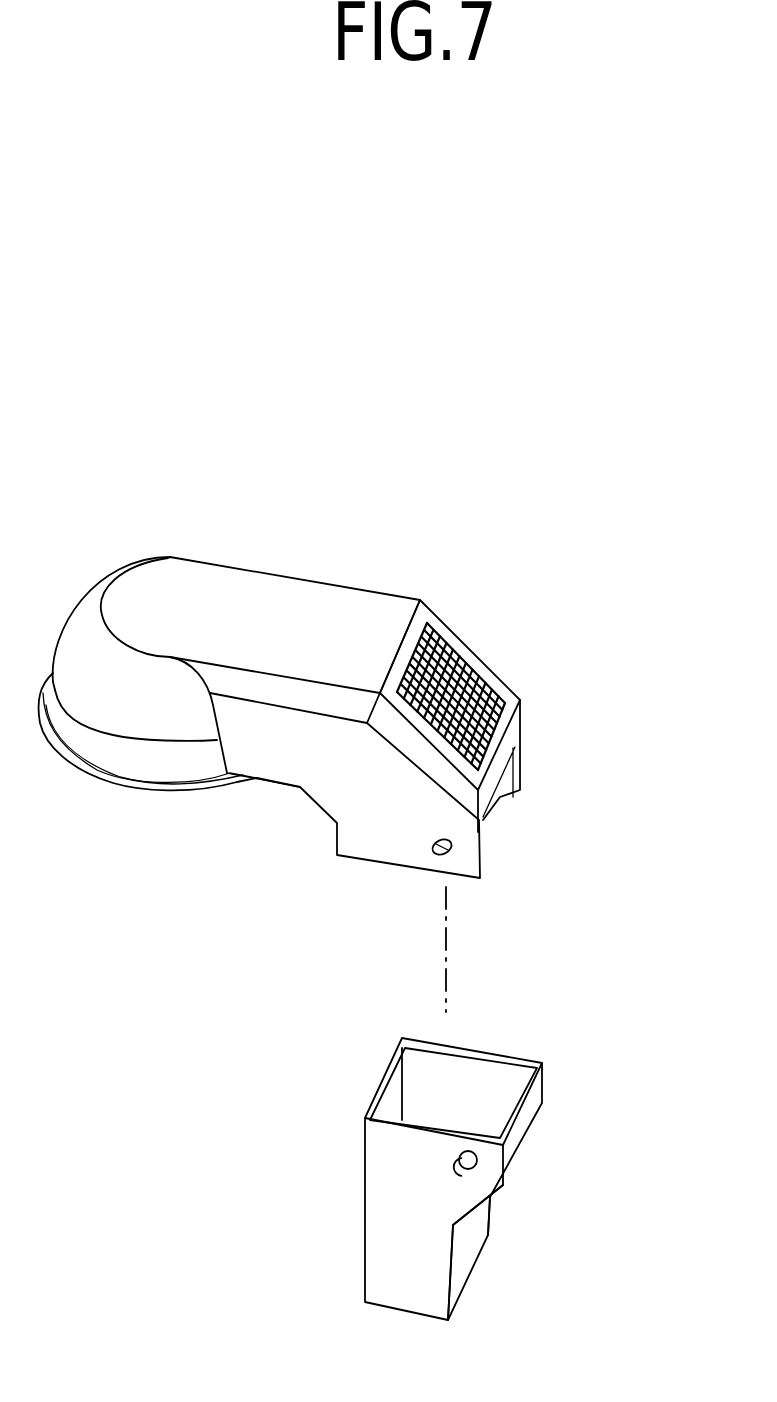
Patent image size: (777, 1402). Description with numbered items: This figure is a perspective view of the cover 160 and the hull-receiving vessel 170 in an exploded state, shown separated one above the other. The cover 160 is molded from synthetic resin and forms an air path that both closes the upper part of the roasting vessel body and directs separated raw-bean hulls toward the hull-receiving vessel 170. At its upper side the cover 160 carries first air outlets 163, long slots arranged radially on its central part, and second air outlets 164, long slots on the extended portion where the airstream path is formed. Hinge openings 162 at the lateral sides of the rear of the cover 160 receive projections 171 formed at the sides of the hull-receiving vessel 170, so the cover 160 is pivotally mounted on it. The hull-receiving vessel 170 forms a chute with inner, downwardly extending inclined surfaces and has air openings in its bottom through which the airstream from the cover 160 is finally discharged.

The cover 160 is at (362, 520).
The hinge openings 162 is at (440, 857).
The first air outlets 163 is at (500, 683).
The second air outlets 164 is at (493, 1198).
The hull-receiving vessel 170 is at (590, 1005).
The projections 171 is at (458, 1170).